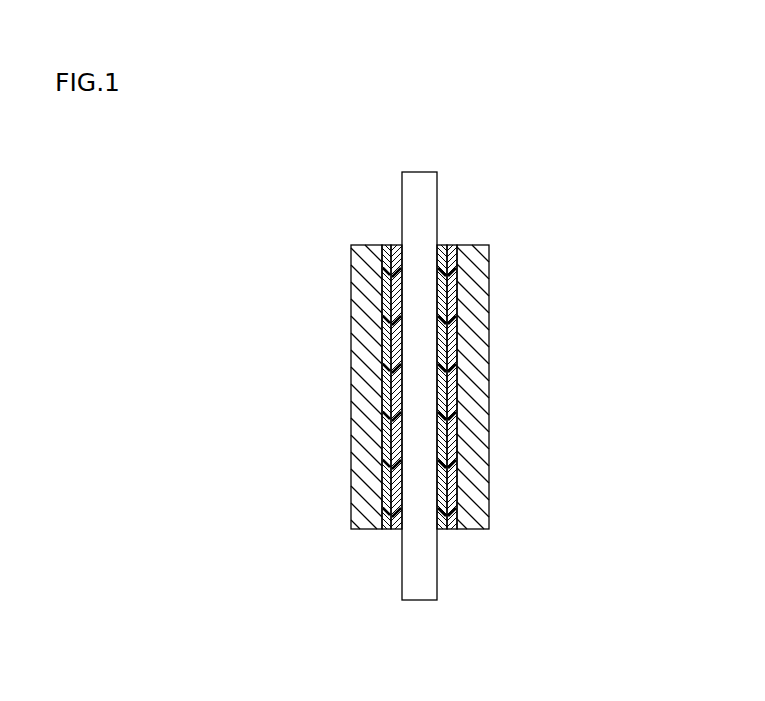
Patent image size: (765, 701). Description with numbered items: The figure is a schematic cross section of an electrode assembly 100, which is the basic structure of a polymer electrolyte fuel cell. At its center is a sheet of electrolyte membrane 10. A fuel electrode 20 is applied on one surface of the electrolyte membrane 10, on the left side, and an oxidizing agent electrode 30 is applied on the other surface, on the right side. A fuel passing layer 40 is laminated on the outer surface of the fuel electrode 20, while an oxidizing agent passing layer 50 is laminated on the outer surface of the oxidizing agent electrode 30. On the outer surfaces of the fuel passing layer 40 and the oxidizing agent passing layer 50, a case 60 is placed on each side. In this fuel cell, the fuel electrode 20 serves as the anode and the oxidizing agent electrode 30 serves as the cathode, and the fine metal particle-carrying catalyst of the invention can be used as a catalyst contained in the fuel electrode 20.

The electrode assembly 100 is at (545, 148).
The electrolyte membrane 10 is at (415, 172).
The fuel electrode 20 is at (395, 244).
The oxidizing agent electrode 30 is at (443, 244).
The fuel passing layer 40 is at (387, 532).
The oxidizing agent passing layer 50 is at (452, 532).
The case 60 is at (350, 355).